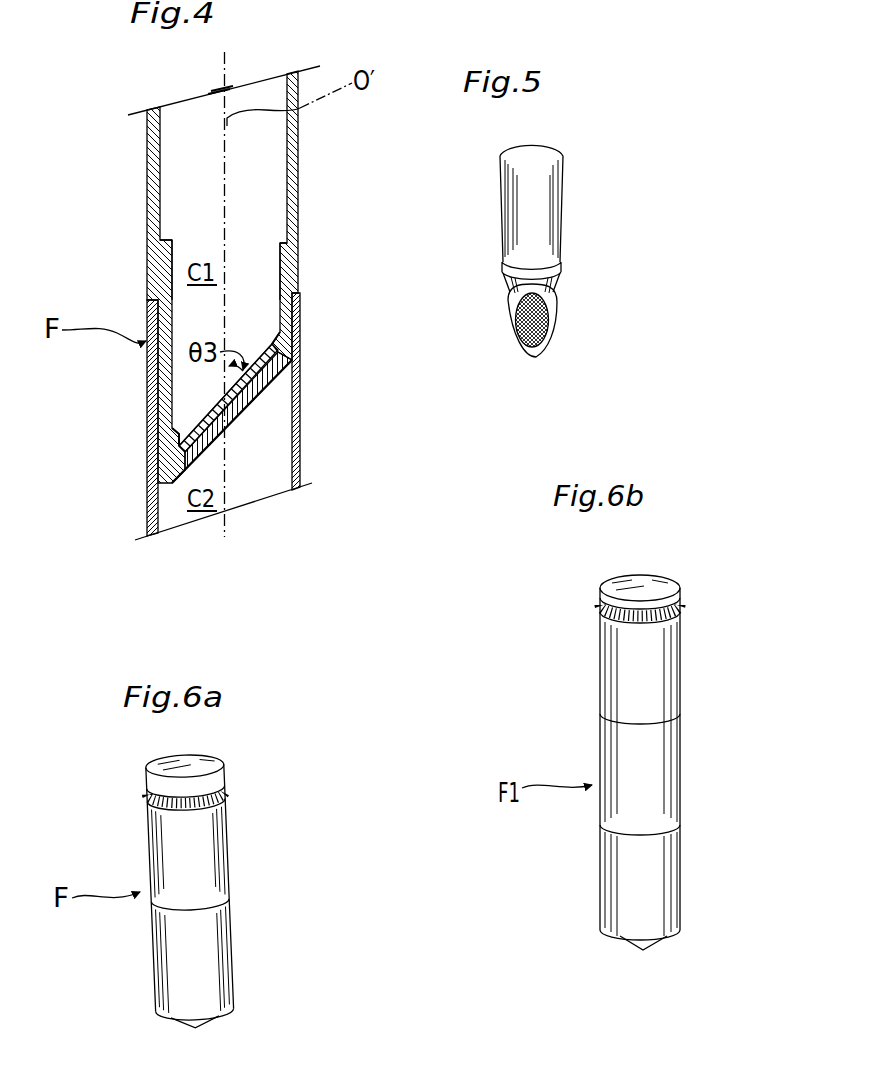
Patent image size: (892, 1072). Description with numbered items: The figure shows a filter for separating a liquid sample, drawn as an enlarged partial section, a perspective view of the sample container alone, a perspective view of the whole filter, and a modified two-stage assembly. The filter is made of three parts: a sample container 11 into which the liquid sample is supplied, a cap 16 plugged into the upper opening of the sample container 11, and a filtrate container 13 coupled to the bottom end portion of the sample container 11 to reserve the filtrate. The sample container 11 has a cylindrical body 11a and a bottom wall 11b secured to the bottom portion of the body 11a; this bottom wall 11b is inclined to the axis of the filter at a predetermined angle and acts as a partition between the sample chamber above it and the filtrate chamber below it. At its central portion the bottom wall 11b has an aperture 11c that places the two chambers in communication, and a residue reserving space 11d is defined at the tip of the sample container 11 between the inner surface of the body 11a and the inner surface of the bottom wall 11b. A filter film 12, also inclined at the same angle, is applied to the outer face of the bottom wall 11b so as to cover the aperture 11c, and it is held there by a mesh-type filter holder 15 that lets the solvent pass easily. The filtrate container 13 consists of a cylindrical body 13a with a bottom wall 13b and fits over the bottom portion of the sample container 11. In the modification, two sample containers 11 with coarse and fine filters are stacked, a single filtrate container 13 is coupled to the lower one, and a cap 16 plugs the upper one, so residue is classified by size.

In FIG. 4, the sample container 11 is at (262, 181).
In FIG. 5, the sample container 11 is at (553, 210).
In FIG. 6B, the sample container 11 is at (670, 647).
In FIG. 6A, the sample container 11 is at (218, 834).
In FIG. 4, the cylindrical body 11a is at (298, 256).
In FIG. 4, the bottom wall 11b is at (270, 340).
In FIG. 4, the aperture 11c is at (162, 431).
In FIG. 4, the residue reserving space 11d is at (162, 429).
In FIG. 4, the filter film 12 is at (212, 405).
In FIG. 4, the filtrate container 13 is at (272, 461).
In FIG. 6B, the filtrate container 13 is at (672, 897).
In FIG. 6A, the filtrate container 13 is at (226, 972).
In FIG. 4, the cylindrical body 13a is at (297, 412).
In FIG. 6A, the cylindrical body 13a is at (231, 992).
In FIG. 6A, the bottom wall 13b is at (197, 1026).
In FIG. 4, the filter holder 15 is at (253, 400).
In FIG. 5, the filter holder 15 is at (518, 338).
In FIG. 6B, the cap 16 is at (657, 580).
In FIG. 6A, the cap 16 is at (203, 766).